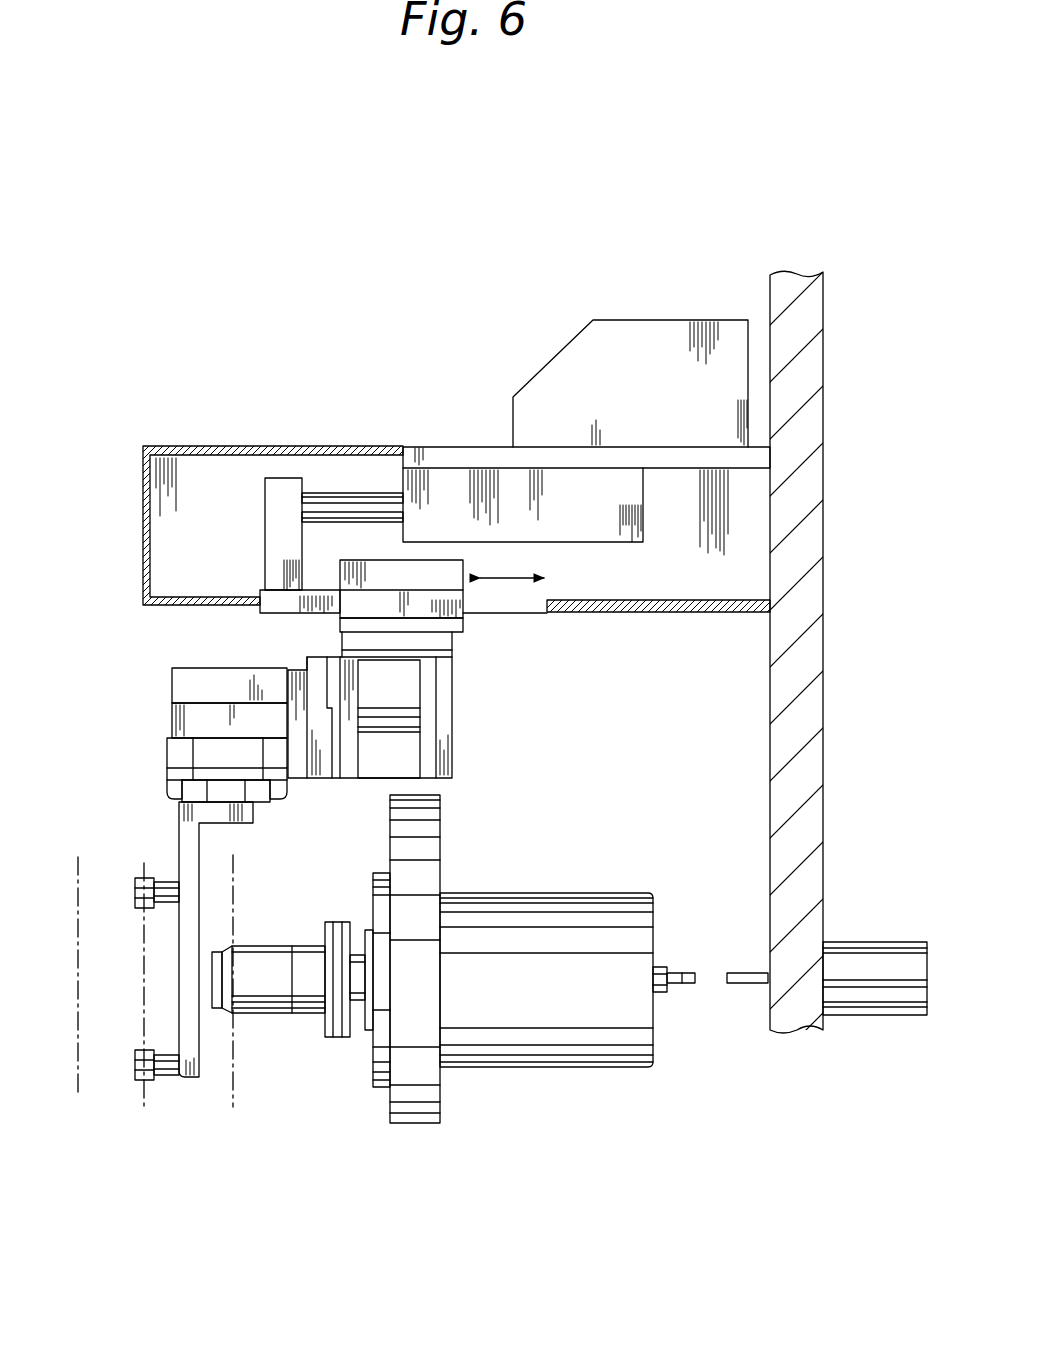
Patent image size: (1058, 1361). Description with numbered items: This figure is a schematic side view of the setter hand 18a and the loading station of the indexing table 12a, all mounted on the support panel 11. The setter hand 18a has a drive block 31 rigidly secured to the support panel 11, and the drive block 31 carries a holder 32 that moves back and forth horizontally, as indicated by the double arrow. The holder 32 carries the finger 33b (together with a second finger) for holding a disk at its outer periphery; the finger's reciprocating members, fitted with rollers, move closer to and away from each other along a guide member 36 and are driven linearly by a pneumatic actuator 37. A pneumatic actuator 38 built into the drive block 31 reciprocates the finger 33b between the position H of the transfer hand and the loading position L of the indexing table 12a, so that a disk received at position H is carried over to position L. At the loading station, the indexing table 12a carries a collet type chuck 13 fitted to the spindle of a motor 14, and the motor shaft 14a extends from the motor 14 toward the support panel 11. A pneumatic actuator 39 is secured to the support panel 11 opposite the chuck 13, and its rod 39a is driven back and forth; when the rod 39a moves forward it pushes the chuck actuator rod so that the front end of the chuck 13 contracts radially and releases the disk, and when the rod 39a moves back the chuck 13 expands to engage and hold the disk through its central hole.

The support panel 11 is at (802, 705).
The indexing table 12a is at (430, 845).
The collet type chuck 13 is at (258, 985).
The motor 14 is at (527, 1053).
The motor shaft 14a is at (685, 970).
The setter hand 18a is at (428, 385).
The drive block 31 is at (245, 445).
The holder 32 is at (435, 607).
The finger 33b is at (210, 880).
The guide member 36 is at (173, 752).
The pneumatic actuator 37 is at (190, 686).
The pneumatic actuator 38 is at (585, 507).
The pneumatic actuator 39 is at (870, 997).
The rod 39a is at (747, 985).